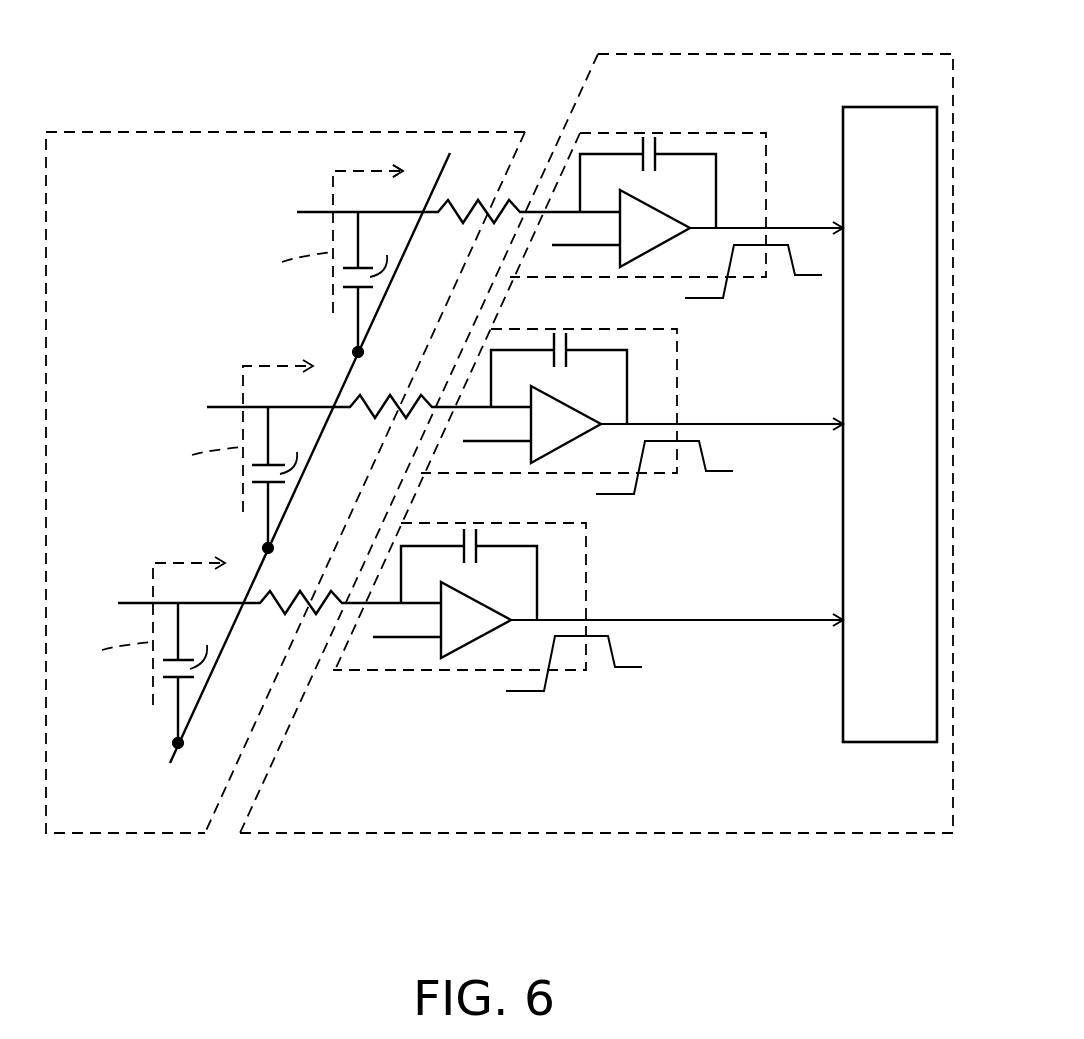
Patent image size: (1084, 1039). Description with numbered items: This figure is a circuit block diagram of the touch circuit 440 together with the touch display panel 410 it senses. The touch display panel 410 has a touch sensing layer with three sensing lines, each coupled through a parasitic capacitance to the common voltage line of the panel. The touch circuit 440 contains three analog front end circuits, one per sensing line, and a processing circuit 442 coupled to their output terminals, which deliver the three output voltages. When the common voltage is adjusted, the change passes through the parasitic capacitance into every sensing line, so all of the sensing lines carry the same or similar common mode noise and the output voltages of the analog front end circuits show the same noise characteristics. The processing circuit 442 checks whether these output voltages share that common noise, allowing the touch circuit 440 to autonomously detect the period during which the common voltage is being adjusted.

The touch display panel 410 is at (333, 522).
The touch circuit 440 is at (795, 833).
The processing circuit 442 is at (867, 742).